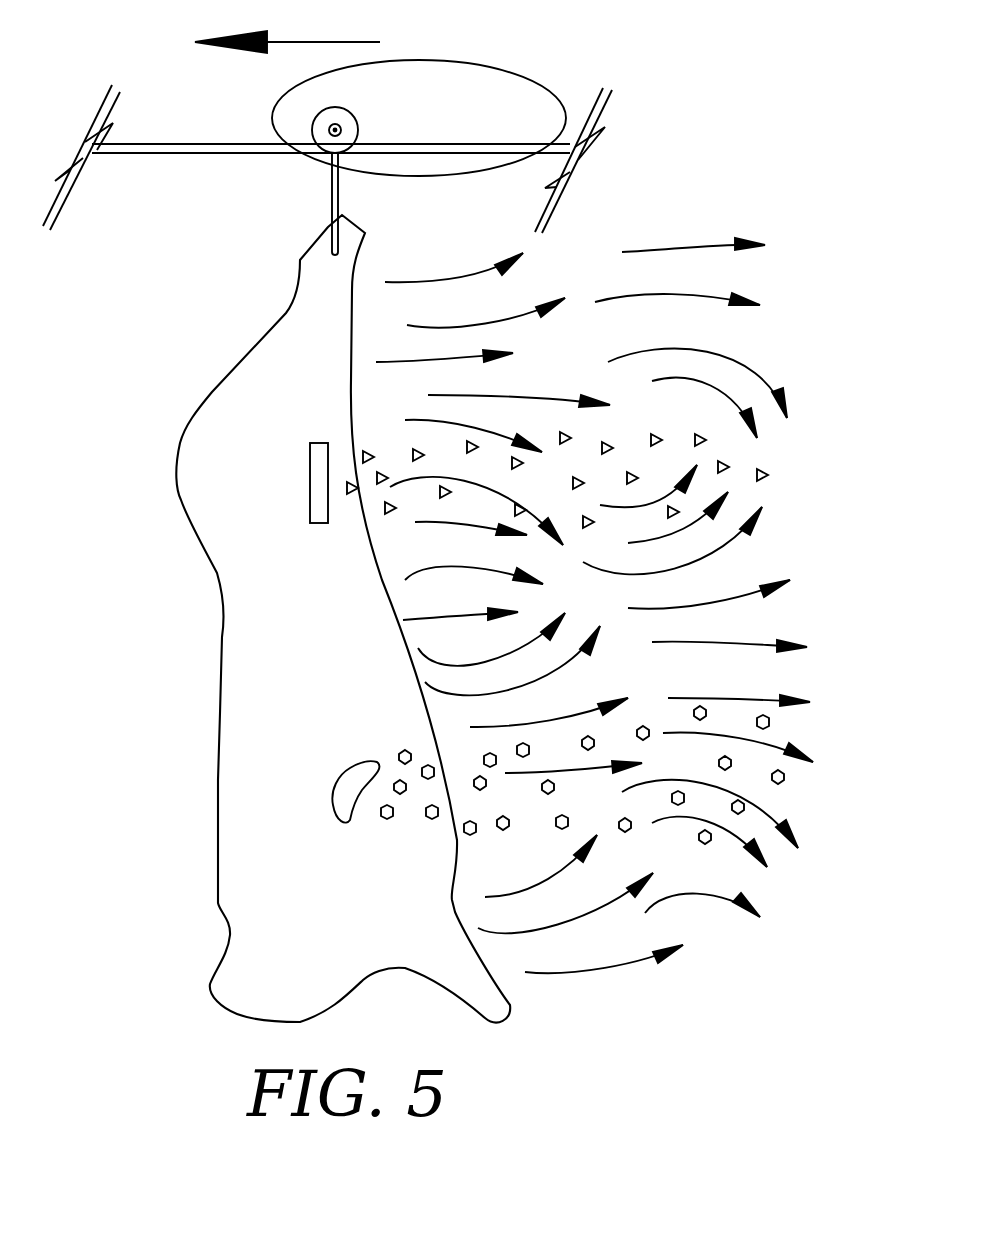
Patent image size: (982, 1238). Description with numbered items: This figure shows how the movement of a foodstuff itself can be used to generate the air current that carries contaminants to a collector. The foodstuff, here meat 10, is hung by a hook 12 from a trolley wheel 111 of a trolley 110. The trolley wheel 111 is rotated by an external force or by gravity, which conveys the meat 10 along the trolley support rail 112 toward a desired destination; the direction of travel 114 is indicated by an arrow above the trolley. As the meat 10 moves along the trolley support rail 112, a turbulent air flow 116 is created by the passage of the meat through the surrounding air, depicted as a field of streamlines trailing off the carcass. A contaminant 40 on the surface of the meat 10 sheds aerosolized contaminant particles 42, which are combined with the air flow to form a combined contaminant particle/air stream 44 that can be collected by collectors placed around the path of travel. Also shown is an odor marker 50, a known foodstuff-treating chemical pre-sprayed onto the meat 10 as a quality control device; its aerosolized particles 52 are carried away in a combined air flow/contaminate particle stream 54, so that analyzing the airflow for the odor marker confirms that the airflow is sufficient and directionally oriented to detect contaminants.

The foodstuff 10 is at (197, 420).
The hook 12 is at (333, 200).
The contaminant 40 is at (352, 760).
The aerosolized contaminant particles 42 is at (473, 833).
The combined contaminant particle/air stream 44 is at (462, 750).
The odor marker 50 is at (318, 443).
The aerosolized particles of odor marker 52 is at (389, 520).
The combined air flow/contaminate particle stream 54 is at (398, 435).
The trolley 110 is at (468, 62).
The trolley wheel 111 is at (350, 110).
The trolley support rail 112 is at (433, 143).
The direction of travel 114 is at (302, 42).
The turbulent air flow 116 is at (757, 384).